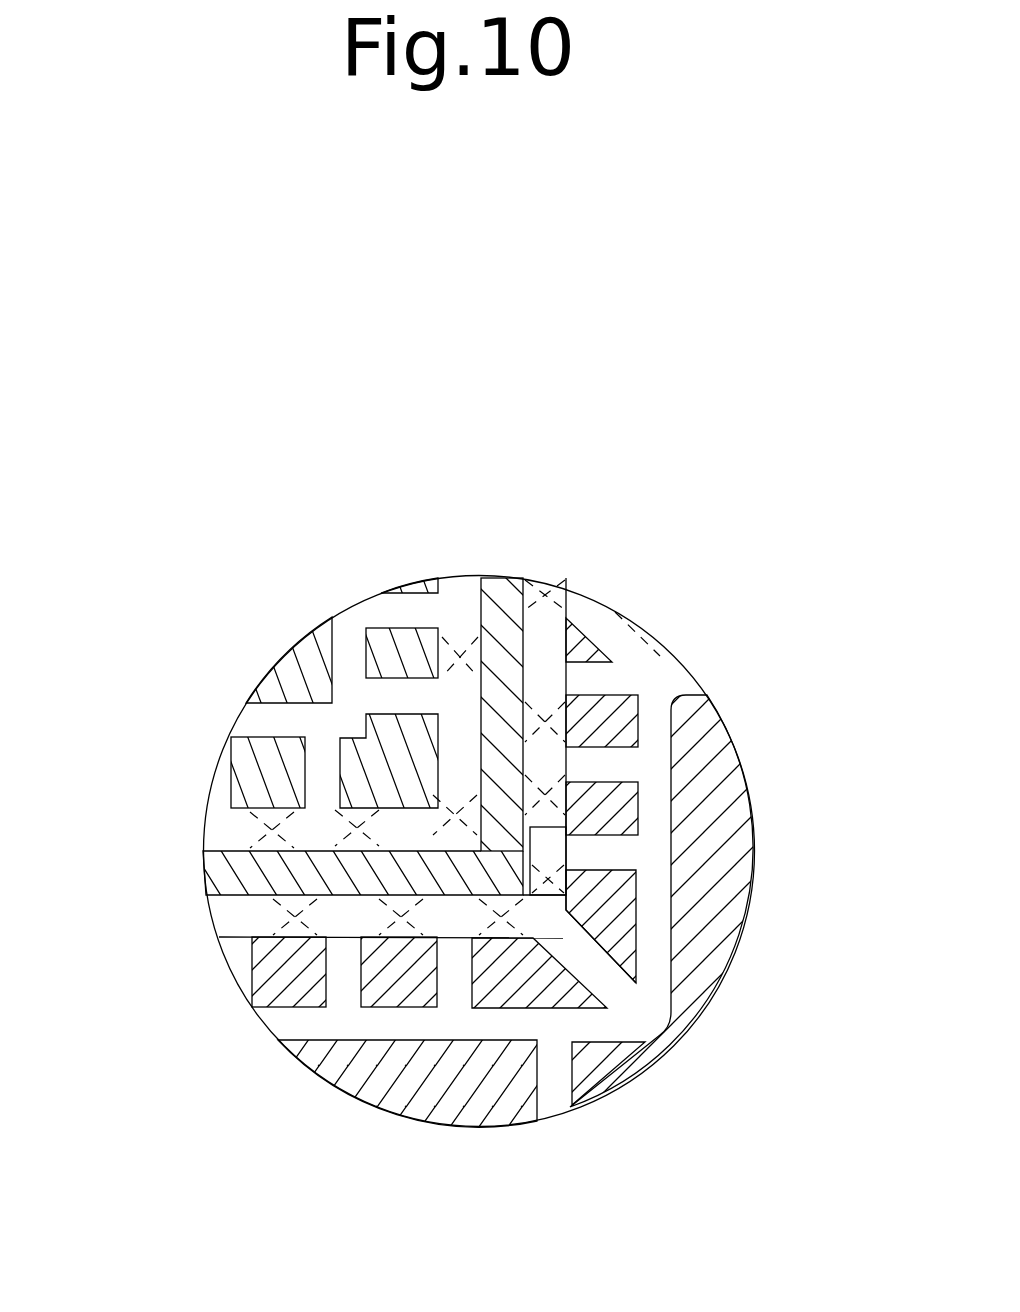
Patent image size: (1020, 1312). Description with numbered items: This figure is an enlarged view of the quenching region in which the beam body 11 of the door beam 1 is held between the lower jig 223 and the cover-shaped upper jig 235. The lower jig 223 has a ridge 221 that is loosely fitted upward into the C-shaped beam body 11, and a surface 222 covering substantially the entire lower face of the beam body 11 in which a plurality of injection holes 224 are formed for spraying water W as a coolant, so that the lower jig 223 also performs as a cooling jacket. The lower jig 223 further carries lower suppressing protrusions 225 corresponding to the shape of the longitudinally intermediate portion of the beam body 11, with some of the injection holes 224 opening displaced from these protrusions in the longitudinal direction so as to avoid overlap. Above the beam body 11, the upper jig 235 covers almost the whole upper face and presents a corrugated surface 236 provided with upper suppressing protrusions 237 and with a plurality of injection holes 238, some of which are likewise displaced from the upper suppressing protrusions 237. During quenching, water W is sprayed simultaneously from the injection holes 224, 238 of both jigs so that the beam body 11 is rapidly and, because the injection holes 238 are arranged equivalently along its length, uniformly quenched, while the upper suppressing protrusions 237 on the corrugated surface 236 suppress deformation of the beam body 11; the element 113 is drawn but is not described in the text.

The door beam 1 is at (200, 877).
The beam body 11 is at (502, 597).
The lower wall portion 113 is at (305, 851).
The ridge 221 is at (718, 767).
The surface 222 is at (300, 937).
The lower jig 223 is at (612, 1063).
The injection holes 224 is at (338, 962).
The lower suppressing protrusions 225 is at (547, 853).
The upper jig 235 is at (317, 640).
The corrugated surface 236 is at (360, 757).
The upper suppressing protrusions 237 is at (457, 757).
The injection holes 238 is at (410, 697).
The water W is at (458, 612).